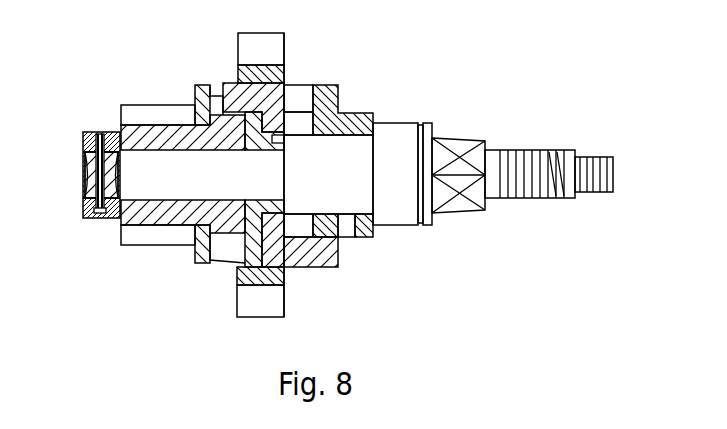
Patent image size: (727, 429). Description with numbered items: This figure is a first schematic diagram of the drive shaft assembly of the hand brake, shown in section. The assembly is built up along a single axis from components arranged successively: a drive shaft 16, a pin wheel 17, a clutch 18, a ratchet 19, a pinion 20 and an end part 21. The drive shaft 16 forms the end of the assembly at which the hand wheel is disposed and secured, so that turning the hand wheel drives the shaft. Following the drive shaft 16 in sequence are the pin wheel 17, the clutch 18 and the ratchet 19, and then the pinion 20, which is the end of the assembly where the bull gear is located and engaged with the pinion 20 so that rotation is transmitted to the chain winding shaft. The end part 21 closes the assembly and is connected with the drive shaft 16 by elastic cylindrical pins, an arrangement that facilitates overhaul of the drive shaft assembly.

The drive shaft 16 is at (533, 77).
The pin wheel 17 is at (458, 307).
The clutch 18 is at (392, 333).
The ratchet 19 is at (337, 333).
The pinion 20 is at (205, 313).
The end part 21 is at (85, 313).